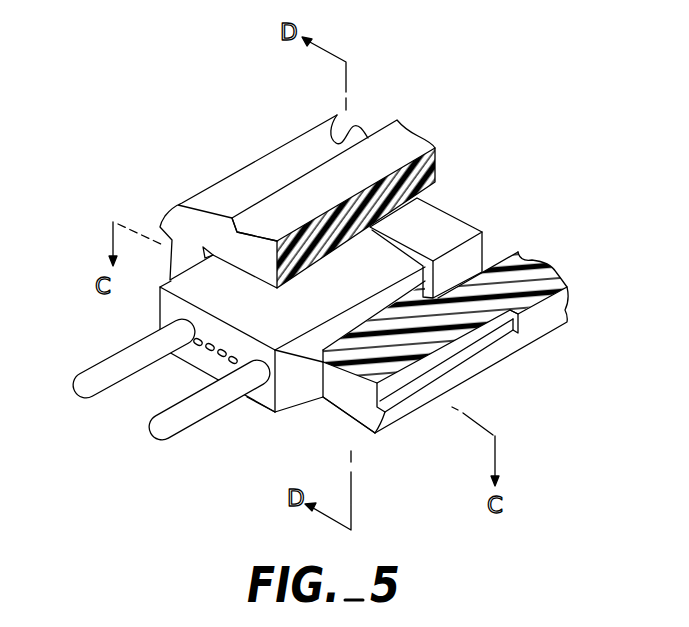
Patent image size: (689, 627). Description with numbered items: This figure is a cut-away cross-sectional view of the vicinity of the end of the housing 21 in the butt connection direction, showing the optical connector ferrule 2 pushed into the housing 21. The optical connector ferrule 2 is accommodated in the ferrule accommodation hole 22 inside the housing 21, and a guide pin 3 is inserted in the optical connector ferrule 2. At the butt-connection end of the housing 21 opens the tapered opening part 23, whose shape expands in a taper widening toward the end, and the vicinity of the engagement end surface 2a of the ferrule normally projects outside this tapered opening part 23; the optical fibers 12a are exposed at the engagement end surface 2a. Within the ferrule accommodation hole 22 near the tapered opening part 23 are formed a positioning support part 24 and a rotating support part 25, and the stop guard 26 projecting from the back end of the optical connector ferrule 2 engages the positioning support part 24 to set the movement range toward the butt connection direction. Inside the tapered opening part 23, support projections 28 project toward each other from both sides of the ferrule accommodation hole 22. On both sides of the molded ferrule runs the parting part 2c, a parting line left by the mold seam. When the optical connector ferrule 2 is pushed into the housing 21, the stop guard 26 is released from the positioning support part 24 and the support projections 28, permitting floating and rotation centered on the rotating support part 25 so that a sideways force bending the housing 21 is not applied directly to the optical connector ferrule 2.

The optical connector ferrule 2 is at (284, 410).
The engagement end surface 2a is at (198, 358).
The parting part 2c is at (270, 403).
The guide pin 3 is at (85, 375).
The optical fibers 12a is at (236, 358).
The housing 21 is at (278, 146).
The ferrule accommodation hole 22 is at (497, 256).
The tapered opening part 23 is at (323, 362).
The positioning support part 24 is at (413, 292).
The rotating support part 25 is at (370, 299).
The stop guard 26 is at (436, 200).
The support projections 28 is at (459, 227).